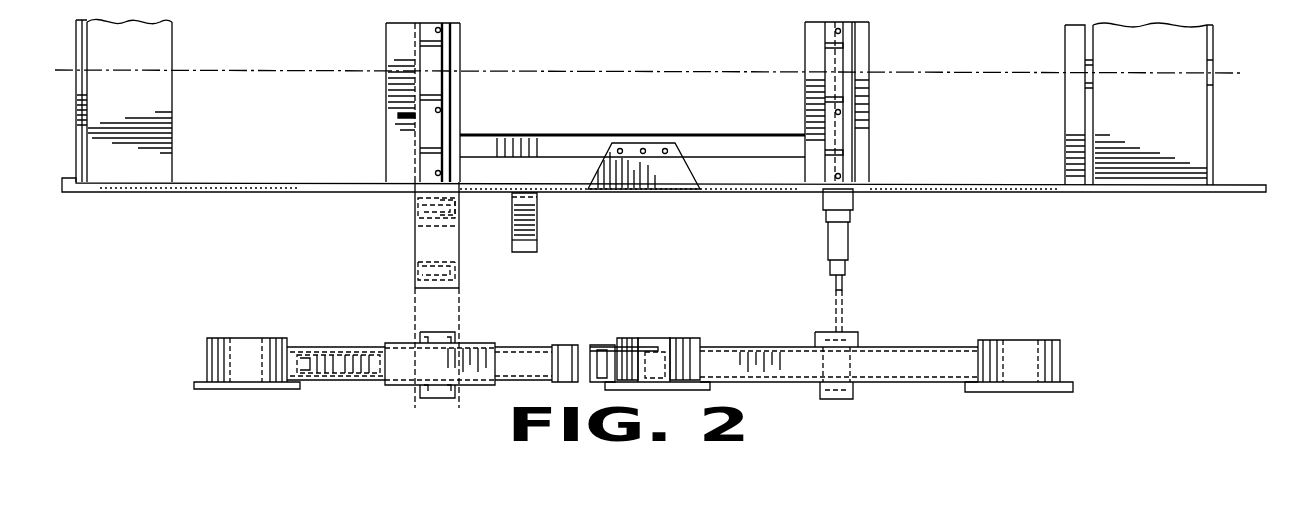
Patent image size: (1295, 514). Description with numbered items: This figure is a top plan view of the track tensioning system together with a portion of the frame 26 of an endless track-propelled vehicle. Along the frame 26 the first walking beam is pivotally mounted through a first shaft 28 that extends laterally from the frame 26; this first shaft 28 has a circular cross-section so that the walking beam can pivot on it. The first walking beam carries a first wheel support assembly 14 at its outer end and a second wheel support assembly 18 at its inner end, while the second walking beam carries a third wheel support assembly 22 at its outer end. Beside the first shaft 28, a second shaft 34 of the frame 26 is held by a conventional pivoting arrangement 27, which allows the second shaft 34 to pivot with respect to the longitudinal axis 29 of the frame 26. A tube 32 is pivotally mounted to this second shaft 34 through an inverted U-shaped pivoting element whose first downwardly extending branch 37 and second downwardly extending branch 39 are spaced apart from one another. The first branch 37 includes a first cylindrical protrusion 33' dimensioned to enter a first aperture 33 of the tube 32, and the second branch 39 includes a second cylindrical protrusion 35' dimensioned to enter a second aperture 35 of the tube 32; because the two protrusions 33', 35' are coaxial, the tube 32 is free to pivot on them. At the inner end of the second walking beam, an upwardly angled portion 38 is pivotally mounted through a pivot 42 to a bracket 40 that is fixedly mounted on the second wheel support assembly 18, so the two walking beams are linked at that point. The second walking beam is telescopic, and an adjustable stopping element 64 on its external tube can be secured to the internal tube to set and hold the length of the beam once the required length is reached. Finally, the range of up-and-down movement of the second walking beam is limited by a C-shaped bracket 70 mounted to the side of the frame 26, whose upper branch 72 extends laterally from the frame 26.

The first wheel support assembly 14 is at (1056, 351).
The second wheel support assembly 18 is at (696, 338).
The third wheel support assembly 22 is at (226, 389).
The frame 26 is at (1153, 204).
The pivoting arrangement 27 is at (462, 60).
The first shaft 28 is at (857, 210).
The longitudinal axis 29 is at (658, 71).
The tube 32 is at (486, 343).
The first aperture 33 is at (405, 327).
The first cylindrical protrusion 33' is at (390, 241).
The second shaft 34 is at (413, 198).
The second aperture 35 is at (410, 408).
The second cylindrical protrusion 35' is at (377, 276).
The first downwardly extending branch 37 is at (457, 207).
The upwardly angled portion 38 is at (586, 345).
The second downwardly extending branch 39 is at (415, 282).
The bracket 40 is at (641, 347).
The pivot 42 is at (607, 345).
The adjustable stopping element 64 is at (558, 345).
The C-shaped bracket 70 is at (510, 240).
The upper branch 72 is at (538, 241).